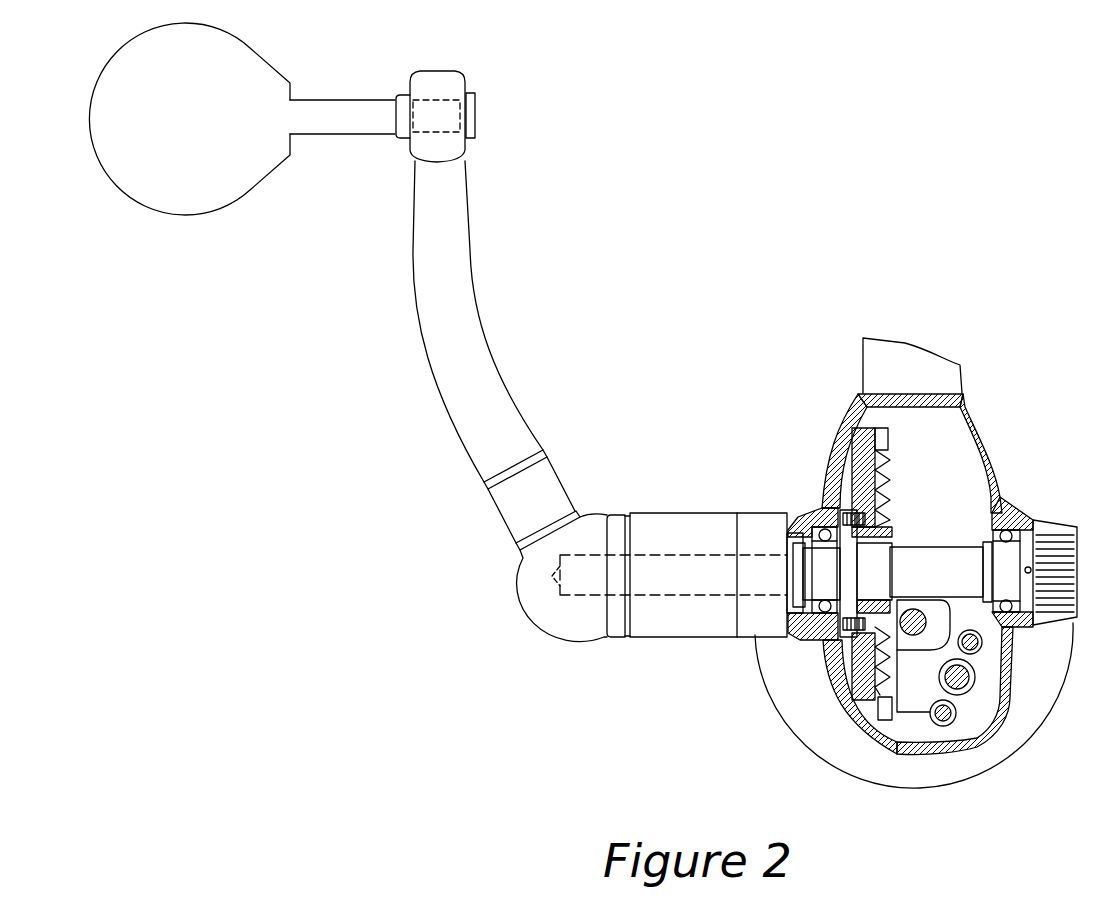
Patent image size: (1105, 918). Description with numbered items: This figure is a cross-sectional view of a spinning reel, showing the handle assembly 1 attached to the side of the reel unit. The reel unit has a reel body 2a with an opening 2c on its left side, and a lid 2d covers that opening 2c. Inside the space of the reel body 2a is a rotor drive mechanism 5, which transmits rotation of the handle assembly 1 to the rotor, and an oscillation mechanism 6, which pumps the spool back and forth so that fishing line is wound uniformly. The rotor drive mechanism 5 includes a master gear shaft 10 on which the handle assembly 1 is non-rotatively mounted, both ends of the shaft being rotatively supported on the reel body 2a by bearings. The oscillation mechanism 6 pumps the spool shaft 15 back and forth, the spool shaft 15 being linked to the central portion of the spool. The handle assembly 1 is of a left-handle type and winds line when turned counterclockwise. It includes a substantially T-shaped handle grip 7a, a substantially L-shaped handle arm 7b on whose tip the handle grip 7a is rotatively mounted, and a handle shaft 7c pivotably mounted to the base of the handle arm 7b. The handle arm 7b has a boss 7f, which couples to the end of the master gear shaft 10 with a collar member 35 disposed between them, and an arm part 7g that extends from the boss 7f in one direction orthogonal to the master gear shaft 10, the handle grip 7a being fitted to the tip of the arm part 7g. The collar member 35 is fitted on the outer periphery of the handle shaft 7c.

The handle assembly 1 is at (421, 361).
The handle grip 7a is at (137, 182).
The handle arm 7b is at (462, 307).
The handle shaft 7c is at (655, 555).
The boss 7f is at (558, 623).
The arm part 7g is at (465, 412).
The collar member 35 is at (708, 513).
The reel body 2a is at (985, 440).
The opening 2c is at (858, 393).
The lid 2d is at (832, 446).
The rotor drive mechanism 5 is at (908, 472).
The master gear shaft 10 is at (940, 560).
The spool shaft 15 is at (853, 698).
The oscillation mechanism 6 is at (985, 693).